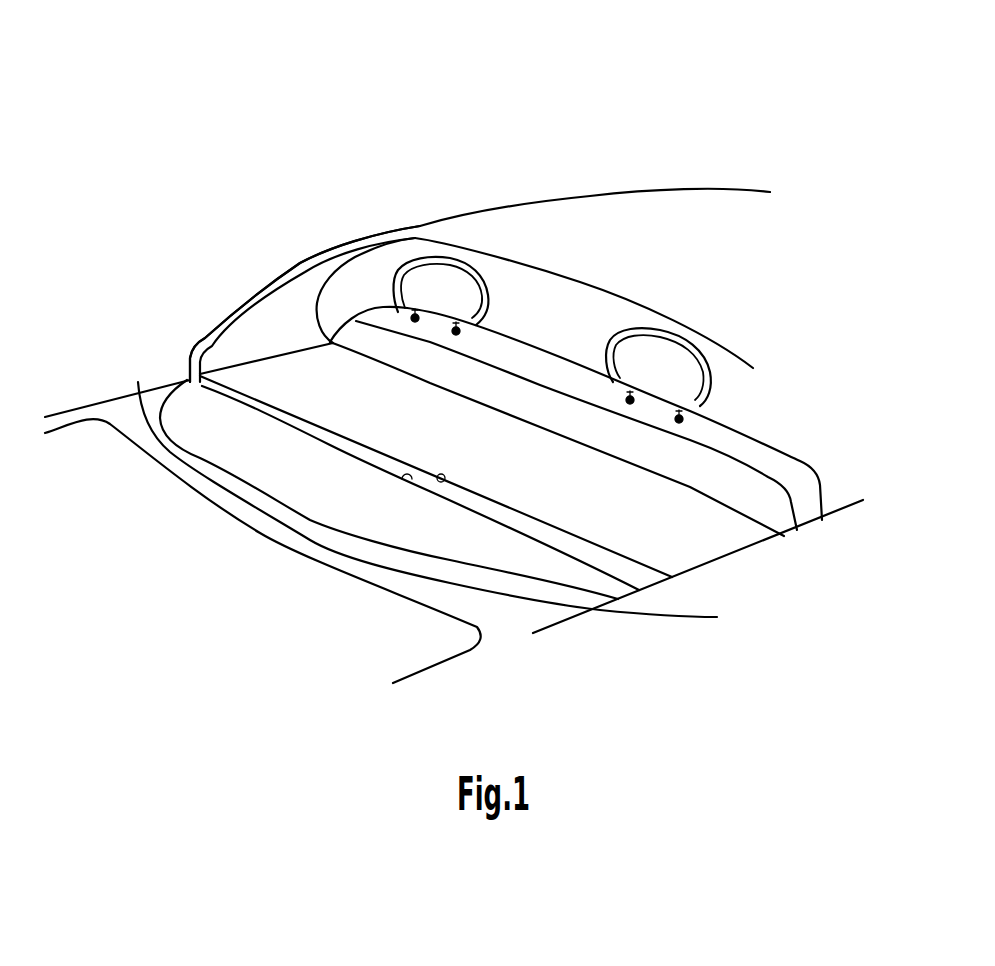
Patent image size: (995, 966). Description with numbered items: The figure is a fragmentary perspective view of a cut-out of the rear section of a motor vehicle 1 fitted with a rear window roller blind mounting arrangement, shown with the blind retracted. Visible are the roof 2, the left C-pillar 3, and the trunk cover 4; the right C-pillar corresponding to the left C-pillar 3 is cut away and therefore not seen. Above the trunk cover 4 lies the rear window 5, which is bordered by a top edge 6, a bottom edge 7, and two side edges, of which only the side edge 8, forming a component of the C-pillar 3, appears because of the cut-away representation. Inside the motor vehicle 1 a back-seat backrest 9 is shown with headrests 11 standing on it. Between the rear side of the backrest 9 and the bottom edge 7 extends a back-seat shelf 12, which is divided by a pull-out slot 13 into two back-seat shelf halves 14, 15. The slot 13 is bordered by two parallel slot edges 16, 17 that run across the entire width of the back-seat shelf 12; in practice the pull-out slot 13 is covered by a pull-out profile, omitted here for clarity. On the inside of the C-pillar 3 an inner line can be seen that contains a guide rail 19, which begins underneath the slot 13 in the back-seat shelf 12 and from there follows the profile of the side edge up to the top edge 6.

The motor vehicle 1 is at (602, 120).
The roof 2 is at (706, 251).
The left C-pillar 3 is at (162, 353).
The trunk cover 4 is at (243, 578).
The rear window 5 is at (540, 297).
The top edge 6 is at (607, 298).
The bottom edge 7 is at (280, 517).
The side edge 8 is at (233, 300).
The back-seat backrest 9 is at (773, 490).
The headrests 11 is at (428, 293).
The back-seat shelf 12 is at (700, 540).
The pull-out slot 13 is at (567, 523).
The back-seat shelf half 14 is at (478, 550).
The back-seat shelf half 15 is at (553, 490).
The slot edge 16 is at (437, 473).
The slot edge 17 is at (400, 477).
The guide rail 19 is at (202, 326).